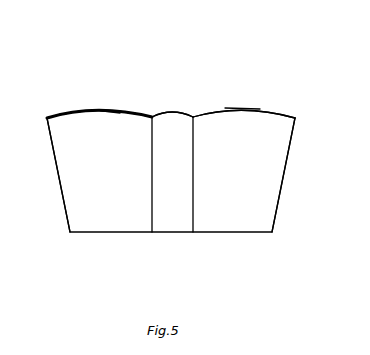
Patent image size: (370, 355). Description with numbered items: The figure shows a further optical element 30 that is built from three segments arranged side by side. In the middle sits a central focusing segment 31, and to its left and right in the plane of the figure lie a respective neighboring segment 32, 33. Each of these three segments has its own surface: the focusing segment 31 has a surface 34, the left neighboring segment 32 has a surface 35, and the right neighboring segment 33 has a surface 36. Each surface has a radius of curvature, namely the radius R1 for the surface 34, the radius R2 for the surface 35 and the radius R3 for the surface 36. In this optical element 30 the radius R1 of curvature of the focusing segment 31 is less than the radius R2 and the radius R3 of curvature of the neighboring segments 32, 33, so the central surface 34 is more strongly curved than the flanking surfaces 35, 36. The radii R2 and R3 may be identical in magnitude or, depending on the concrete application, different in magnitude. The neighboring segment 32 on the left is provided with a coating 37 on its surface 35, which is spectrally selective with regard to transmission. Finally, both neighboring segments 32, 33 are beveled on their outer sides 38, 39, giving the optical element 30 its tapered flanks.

The optical element 30 is at (267, 102).
The central focusing segment 31 is at (172, 218).
The neighboring segment 32 is at (115, 218).
The neighboring segment 33 is at (232, 218).
The surface 34 is at (171, 110).
The surface 35 is at (114, 109).
The surface 36 is at (232, 110).
The coating 37 is at (94, 110).
The outer side 38 is at (57, 163).
The outer side 39 is at (287, 167).
The radius of curvature R1 is at (182, 117).
The radius of curvature R2 is at (122, 118).
The radius of curvature R3 is at (243, 116).